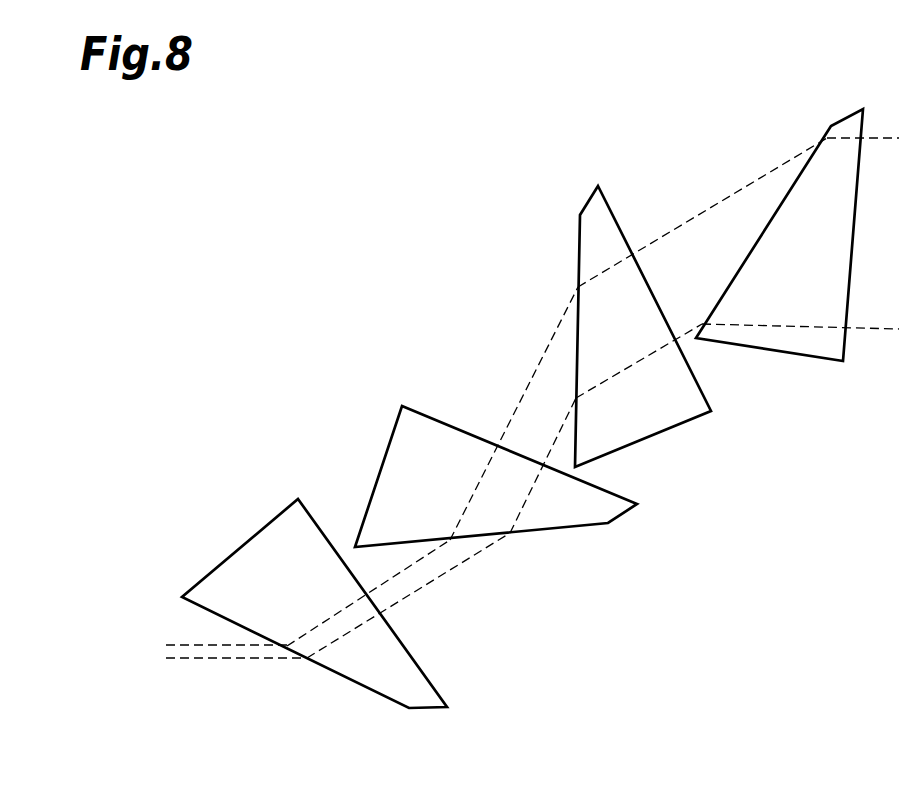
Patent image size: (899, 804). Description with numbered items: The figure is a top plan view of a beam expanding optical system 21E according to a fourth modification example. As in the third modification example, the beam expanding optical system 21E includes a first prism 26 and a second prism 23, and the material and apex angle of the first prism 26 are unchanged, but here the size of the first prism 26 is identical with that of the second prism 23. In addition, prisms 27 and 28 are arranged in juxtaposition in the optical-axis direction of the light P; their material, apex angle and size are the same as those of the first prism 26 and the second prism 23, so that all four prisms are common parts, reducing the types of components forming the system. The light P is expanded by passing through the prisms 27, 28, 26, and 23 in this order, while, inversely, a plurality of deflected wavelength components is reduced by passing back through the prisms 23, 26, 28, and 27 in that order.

The beam expanding optical system 21E is at (522, 411).
The second prism 23 is at (779, 311).
The first prism 26 is at (659, 434).
The prism 27 is at (416, 662).
The prism 28 is at (559, 529).
The light P is at (200, 660).